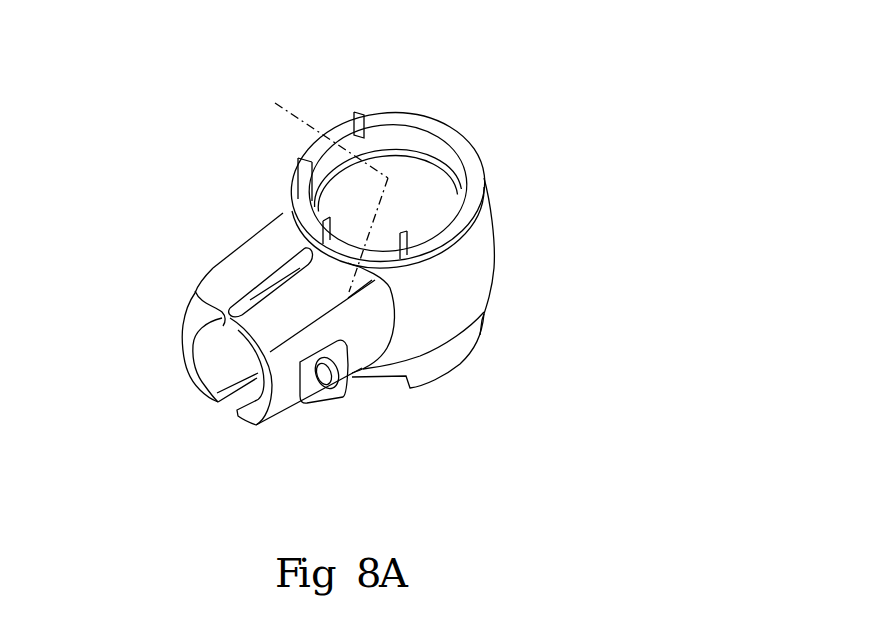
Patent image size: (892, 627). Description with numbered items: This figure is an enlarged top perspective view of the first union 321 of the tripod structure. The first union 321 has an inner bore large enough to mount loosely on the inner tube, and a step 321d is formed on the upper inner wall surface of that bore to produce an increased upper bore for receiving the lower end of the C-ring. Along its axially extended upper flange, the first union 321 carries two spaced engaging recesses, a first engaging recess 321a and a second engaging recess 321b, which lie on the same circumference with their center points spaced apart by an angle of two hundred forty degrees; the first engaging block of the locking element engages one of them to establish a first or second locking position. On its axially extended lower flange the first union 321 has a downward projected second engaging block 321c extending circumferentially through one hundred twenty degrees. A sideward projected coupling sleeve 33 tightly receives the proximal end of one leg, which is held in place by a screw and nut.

The first union 321 is at (282, 216).
The first engaging recess 321a is at (335, 142).
The second engaging recess 321b is at (388, 252).
The second engaging block 321c is at (460, 362).
The step 321d is at (388, 160).
The coupling sleeve 33 is at (240, 289).